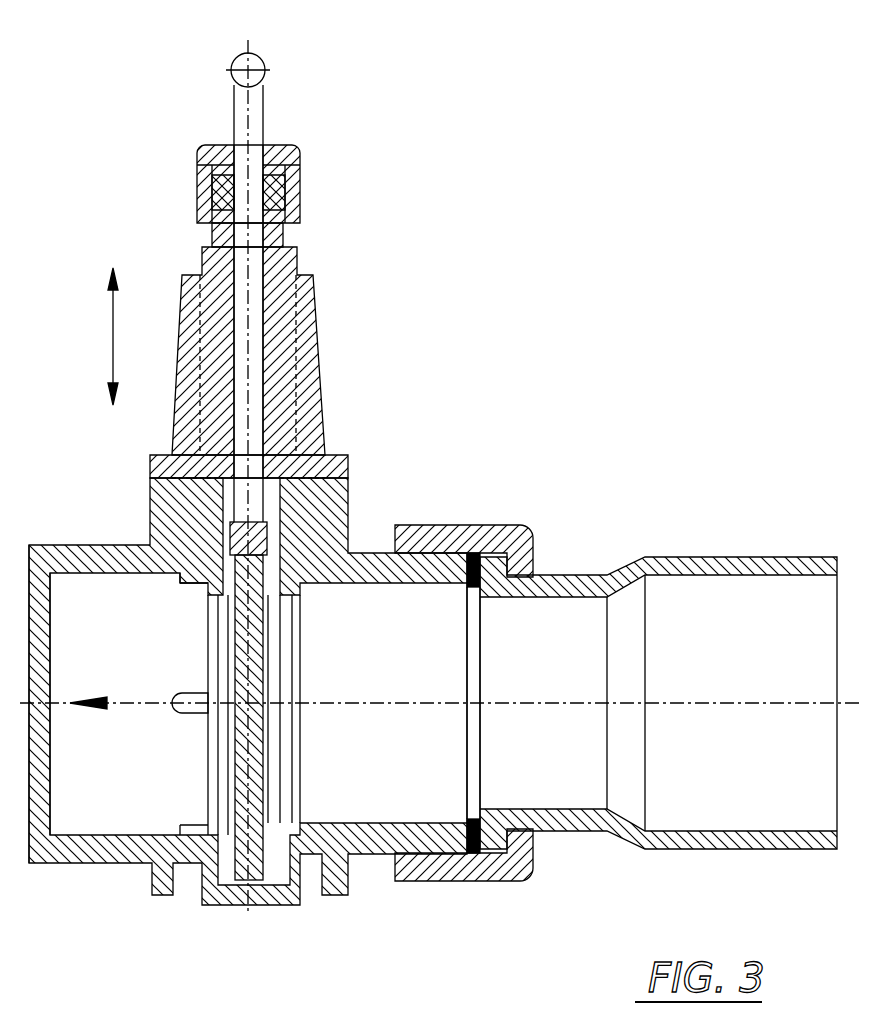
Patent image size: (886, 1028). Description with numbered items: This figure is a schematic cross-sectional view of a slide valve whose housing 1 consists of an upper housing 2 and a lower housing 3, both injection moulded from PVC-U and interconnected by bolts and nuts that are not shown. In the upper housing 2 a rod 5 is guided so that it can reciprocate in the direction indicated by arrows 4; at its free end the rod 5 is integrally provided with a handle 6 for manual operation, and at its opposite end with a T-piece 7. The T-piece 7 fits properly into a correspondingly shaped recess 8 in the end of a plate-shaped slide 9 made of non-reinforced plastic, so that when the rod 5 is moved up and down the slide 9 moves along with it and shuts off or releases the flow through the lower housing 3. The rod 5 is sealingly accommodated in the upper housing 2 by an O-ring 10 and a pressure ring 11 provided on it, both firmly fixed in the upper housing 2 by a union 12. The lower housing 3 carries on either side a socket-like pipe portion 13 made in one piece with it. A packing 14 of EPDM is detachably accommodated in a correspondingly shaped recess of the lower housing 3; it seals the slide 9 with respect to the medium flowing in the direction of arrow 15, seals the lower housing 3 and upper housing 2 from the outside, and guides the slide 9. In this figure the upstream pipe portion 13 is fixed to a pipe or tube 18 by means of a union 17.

The housing 1 is at (433, 398).
The upper housing 2 is at (312, 336).
The lower housing 3 is at (342, 490).
The arrows 4 is at (105, 338).
The rod 5 is at (262, 98).
The handle 6 is at (256, 62).
The T-piece 7 is at (195, 590).
The recess 8 is at (268, 545).
The plate-shaped slide 9 is at (264, 718).
The O-ring 10 is at (298, 212).
The pressure ring 11 is at (293, 150).
The union 12 is at (200, 174).
The pipe portion 13 is at (78, 548).
The packing 14 is at (302, 588).
The arrow 15 is at (108, 688).
The union 17 is at (518, 540).
The pipe or tube 18 is at (727, 848).